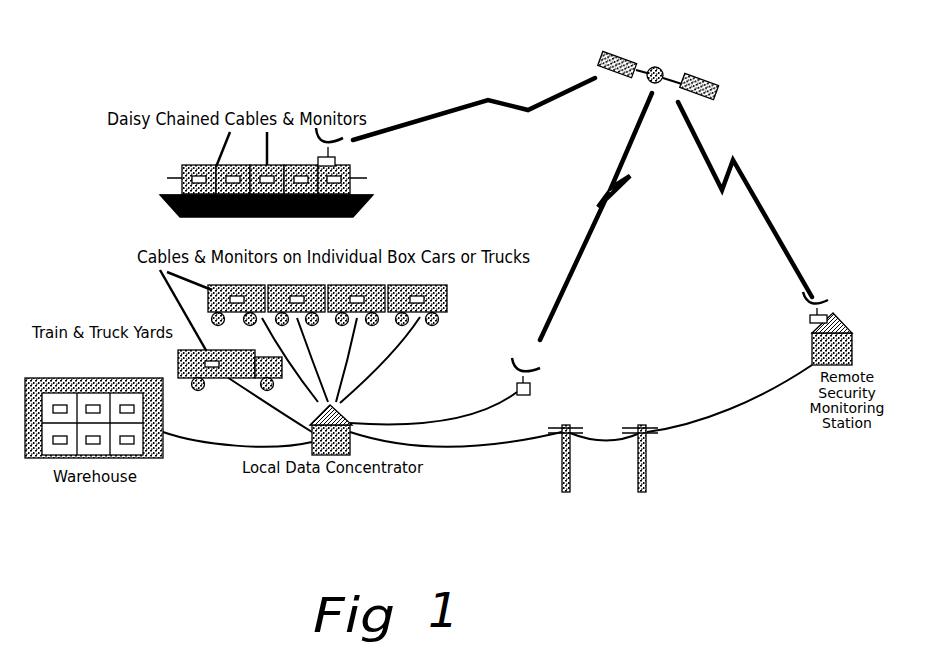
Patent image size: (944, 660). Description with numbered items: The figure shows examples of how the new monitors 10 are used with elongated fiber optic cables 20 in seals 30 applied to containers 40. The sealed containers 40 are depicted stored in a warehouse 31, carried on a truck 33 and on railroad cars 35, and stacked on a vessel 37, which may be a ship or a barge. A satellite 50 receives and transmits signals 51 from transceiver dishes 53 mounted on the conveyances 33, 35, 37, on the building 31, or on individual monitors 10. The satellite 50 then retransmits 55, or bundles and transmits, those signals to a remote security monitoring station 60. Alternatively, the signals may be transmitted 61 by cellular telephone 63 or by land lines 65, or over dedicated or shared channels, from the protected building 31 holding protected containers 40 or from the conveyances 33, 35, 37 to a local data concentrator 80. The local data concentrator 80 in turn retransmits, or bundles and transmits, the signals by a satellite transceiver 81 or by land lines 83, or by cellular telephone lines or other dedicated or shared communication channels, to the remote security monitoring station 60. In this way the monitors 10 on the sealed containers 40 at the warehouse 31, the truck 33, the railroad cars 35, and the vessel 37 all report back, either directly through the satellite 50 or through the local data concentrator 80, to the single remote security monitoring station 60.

The monitor 10 is at (259, 152).
The elongated fiber optic cable 20 is at (358, 170).
The seal 30 is at (359, 294).
The warehouse 31 is at (68, 378).
The truck 33 is at (178, 363).
The railroad car 35 is at (448, 305).
The vessel 37 is at (370, 198).
The container 40 is at (180, 192).
The satellite 50 is at (661, 67).
The signals 51 is at (628, 147).
The transceiver dish 53 is at (350, 122).
The retransmission 55 is at (775, 238).
The remote security monitoring station 60 is at (810, 343).
The transmission 61 is at (418, 312).
The cellular telephone 63 is at (393, 365).
The land line 65 is at (187, 431).
The local data concentrator 80 is at (348, 420).
The satellite transceiver 81 is at (533, 370).
The land lines 83 is at (490, 450).